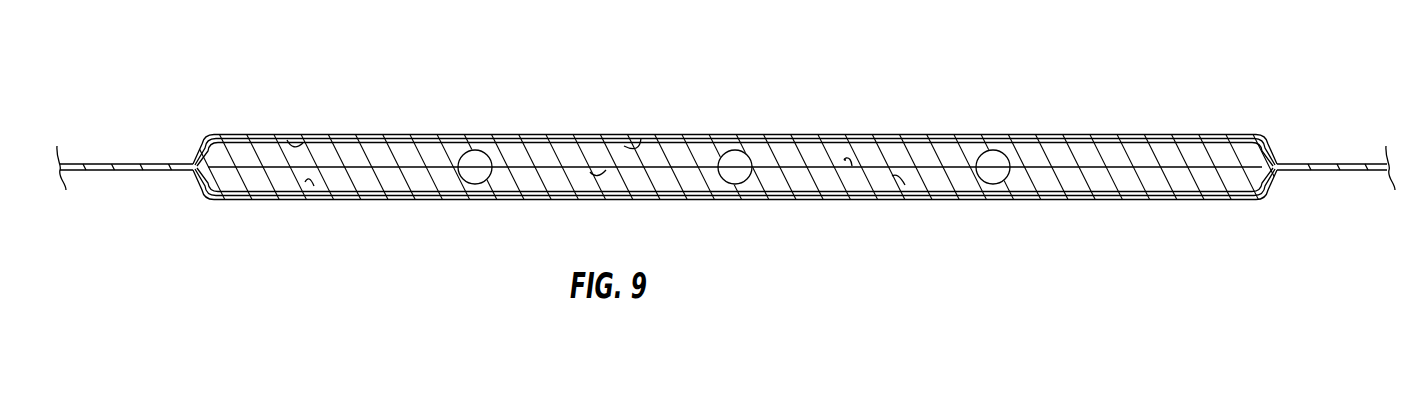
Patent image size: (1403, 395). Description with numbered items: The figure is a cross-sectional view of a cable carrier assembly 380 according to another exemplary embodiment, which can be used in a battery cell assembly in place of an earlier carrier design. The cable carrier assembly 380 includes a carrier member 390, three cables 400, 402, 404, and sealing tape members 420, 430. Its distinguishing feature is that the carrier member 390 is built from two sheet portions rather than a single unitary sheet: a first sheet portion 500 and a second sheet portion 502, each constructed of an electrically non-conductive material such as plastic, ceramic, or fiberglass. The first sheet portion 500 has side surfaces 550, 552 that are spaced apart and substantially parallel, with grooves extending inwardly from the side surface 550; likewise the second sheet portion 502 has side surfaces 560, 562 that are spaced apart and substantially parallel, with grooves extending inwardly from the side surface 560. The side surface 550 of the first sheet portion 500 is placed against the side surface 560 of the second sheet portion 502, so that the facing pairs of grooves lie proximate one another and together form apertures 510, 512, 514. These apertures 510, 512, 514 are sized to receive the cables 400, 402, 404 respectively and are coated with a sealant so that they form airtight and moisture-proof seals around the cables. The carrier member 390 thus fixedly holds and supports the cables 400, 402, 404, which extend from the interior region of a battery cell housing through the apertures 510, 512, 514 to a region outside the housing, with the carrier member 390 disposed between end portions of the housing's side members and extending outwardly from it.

The cable carrier assembly 380 is at (907, 78).
The carrier member 390 is at (801, 163).
The cable 400 is at (471, 160).
The cable 402 is at (727, 153).
The cable 404 is at (991, 157).
The sealing tape member 420 is at (305, 182).
The sealing tape member 430 is at (287, 140).
The first sheet portion 500 is at (379, 178).
The second sheet portion 502 is at (375, 153).
The aperture 510 is at (474, 175).
The aperture 512 is at (738, 177).
The aperture 514 is at (992, 178).
The side surface 550 is at (846, 160).
The side surface 552 is at (892, 176).
The side surface 560 is at (590, 172).
The side surface 562 is at (641, 138).